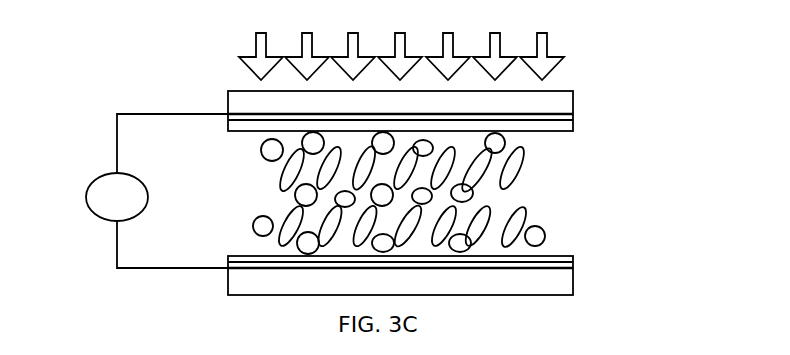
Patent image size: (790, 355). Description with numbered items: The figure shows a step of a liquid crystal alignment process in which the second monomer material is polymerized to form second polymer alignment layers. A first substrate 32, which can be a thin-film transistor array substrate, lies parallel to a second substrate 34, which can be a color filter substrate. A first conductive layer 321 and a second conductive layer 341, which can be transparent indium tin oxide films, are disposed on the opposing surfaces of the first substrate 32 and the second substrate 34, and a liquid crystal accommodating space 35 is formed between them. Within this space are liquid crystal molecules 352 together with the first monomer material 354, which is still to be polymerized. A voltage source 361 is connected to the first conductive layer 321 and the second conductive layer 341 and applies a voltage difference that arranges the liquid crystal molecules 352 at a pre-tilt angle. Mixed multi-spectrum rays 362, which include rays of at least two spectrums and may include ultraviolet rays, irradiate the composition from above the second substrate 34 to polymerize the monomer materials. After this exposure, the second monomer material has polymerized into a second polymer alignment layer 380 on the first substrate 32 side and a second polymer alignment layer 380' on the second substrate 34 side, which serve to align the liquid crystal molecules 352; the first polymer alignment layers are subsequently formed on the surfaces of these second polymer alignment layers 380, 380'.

The mixed multi-spectrum rays 362 is at (558, 42).
The second substrate 34 is at (558, 101).
The second conductive layer 341 is at (576, 114).
The second polymer alignment layer 380' is at (432, 132).
The liquid crystal accommodating space 35 is at (585, 180).
The liquid crystal molecules 352 is at (296, 178).
The first monomer material 354 is at (270, 150).
The voltage source 361 is at (88, 187).
The second polymer alignment layer 380 is at (430, 249).
The first conductive layer 321 is at (560, 265).
The first substrate 32 is at (558, 283).